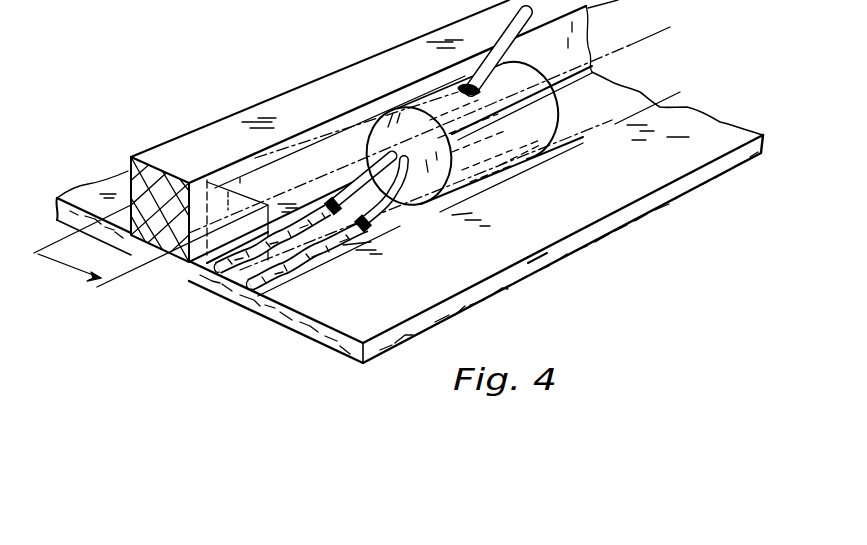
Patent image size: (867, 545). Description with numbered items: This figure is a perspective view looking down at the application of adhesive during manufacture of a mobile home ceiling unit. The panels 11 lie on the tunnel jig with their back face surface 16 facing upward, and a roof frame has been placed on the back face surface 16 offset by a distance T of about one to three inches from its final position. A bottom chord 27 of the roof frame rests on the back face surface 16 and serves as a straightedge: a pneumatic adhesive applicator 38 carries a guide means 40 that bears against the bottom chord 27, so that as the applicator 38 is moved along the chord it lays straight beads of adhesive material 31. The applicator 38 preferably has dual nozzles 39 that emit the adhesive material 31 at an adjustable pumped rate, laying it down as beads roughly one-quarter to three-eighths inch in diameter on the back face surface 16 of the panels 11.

The panels 11 is at (623, 178).
The back face surface 16 is at (538, 240).
The bottom chord 27 is at (203, 150).
The adhesive material 31 is at (270, 290).
The pneumatic adhesive applicator 38 is at (508, 136).
The dual nozzles 39 is at (362, 221).
The guide means 40 is at (363, 133).